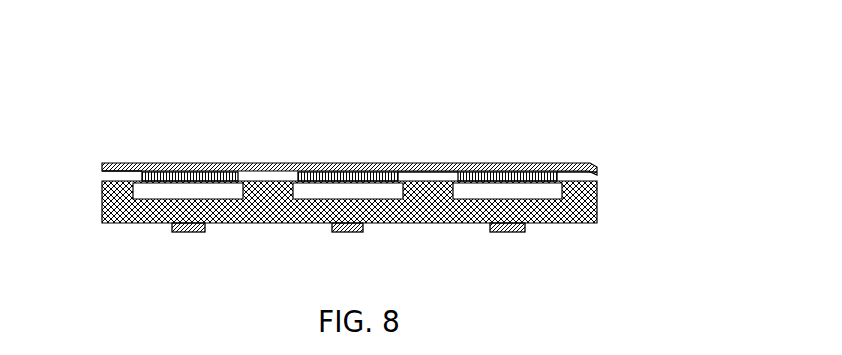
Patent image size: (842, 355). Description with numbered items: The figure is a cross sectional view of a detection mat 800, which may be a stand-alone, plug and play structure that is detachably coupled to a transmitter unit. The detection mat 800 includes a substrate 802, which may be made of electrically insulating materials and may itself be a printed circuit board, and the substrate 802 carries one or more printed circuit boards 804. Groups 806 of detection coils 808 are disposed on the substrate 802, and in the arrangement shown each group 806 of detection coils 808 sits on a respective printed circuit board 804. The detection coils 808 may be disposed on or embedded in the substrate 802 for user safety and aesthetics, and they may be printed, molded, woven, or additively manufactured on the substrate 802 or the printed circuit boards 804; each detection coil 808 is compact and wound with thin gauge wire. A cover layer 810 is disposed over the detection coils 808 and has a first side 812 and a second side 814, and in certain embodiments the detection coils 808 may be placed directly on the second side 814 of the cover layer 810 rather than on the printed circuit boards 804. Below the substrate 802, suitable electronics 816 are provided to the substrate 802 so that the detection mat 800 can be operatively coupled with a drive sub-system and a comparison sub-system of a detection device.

The detection mat 800 is at (557, 55).
The substrate 802 is at (598, 204).
The printed circuit boards 804 is at (278, 224).
The groups of detection coils 806 is at (276, 166).
The detection coils 808 is at (138, 173).
The cover layer 810 is at (407, 163).
The first side 812 is at (578, 164).
The second side 814 is at (598, 173).
The electronics 816 is at (363, 228).